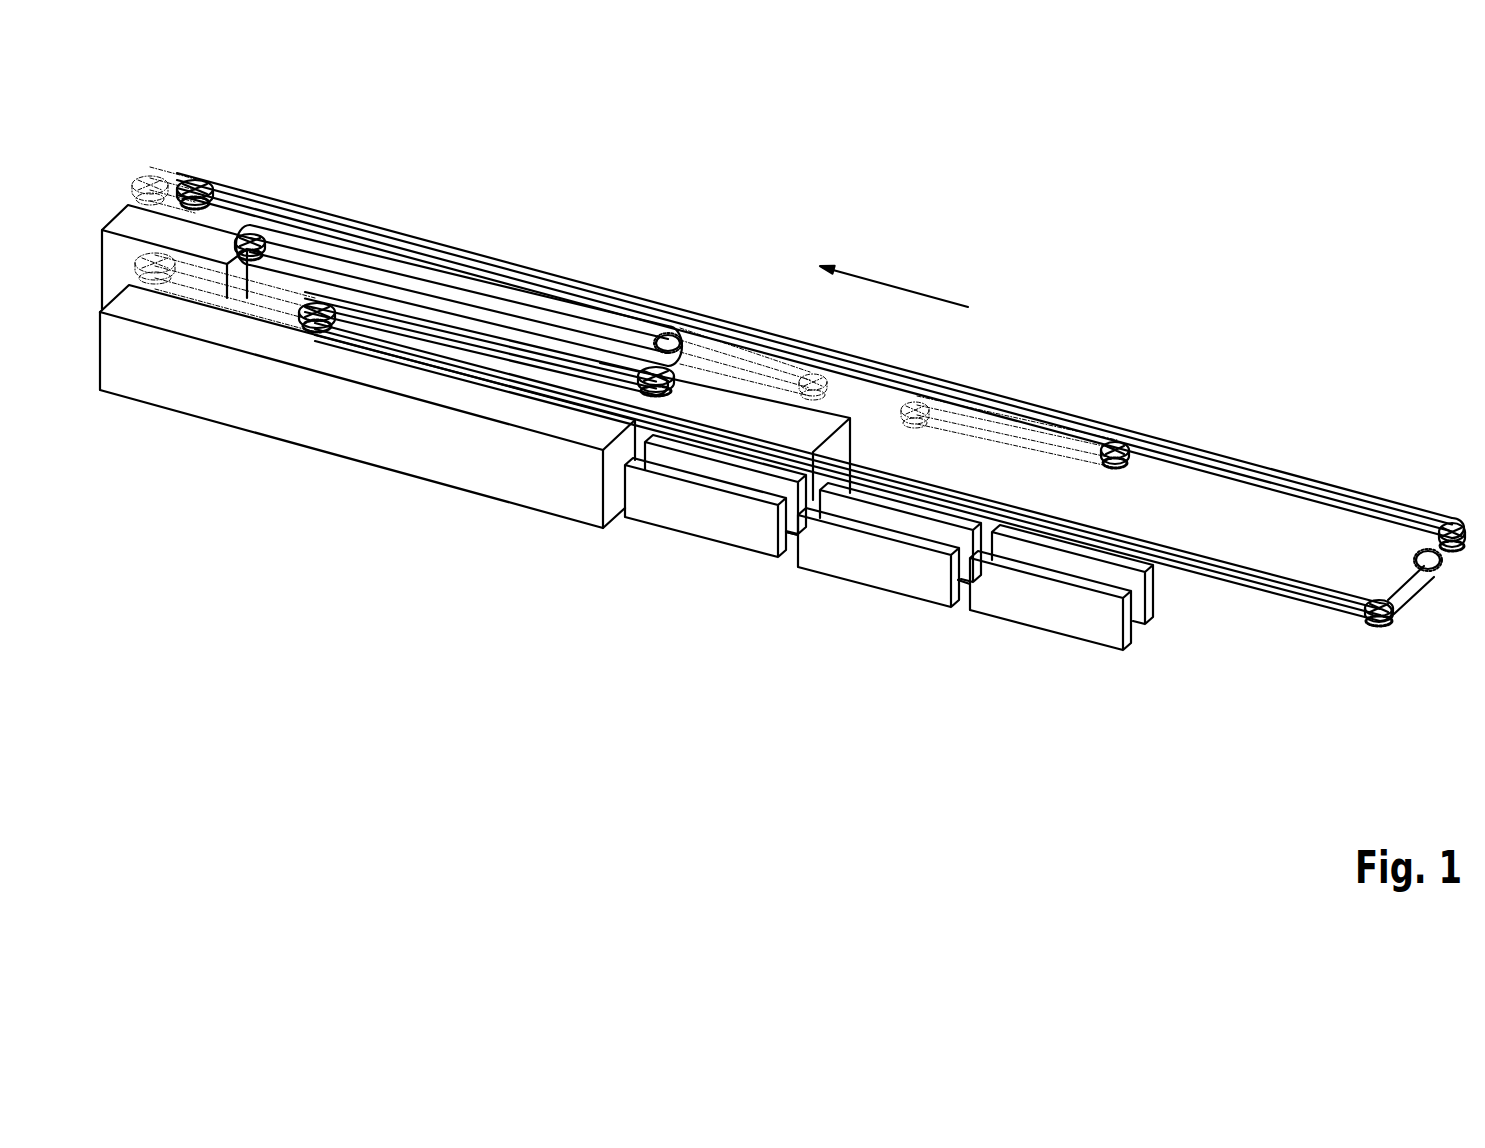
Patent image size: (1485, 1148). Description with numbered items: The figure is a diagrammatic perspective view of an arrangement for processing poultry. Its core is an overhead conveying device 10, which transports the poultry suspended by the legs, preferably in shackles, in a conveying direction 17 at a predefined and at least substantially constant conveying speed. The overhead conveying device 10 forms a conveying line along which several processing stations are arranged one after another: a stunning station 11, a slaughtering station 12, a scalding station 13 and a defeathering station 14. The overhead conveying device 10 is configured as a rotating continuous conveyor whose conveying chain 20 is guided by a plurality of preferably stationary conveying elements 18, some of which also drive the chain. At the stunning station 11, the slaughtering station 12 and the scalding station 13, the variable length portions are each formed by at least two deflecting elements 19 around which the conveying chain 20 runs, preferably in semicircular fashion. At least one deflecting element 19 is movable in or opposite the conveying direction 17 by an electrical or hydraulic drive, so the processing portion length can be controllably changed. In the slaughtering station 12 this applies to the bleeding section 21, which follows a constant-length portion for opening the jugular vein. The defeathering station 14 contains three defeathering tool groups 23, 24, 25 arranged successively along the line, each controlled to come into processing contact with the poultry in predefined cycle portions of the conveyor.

The overhead conveying device 10 is at (1261, 609).
The stunning station 11 is at (208, 240).
The slaughtering station 12 is at (735, 410).
The scalding station 13 is at (515, 488).
The defeathering station 14 is at (751, 730).
The conveying direction 17 is at (900, 284).
The conveying elements 18 is at (253, 245).
The deflecting elements 19 is at (148, 178).
The conveying chain 20 is at (1208, 460).
The bleeding section 21 is at (472, 362).
The defeathering tool group 23 is at (689, 565).
The defeathering tool group 24 is at (862, 612).
The defeathering tool group 25 is at (1034, 657).